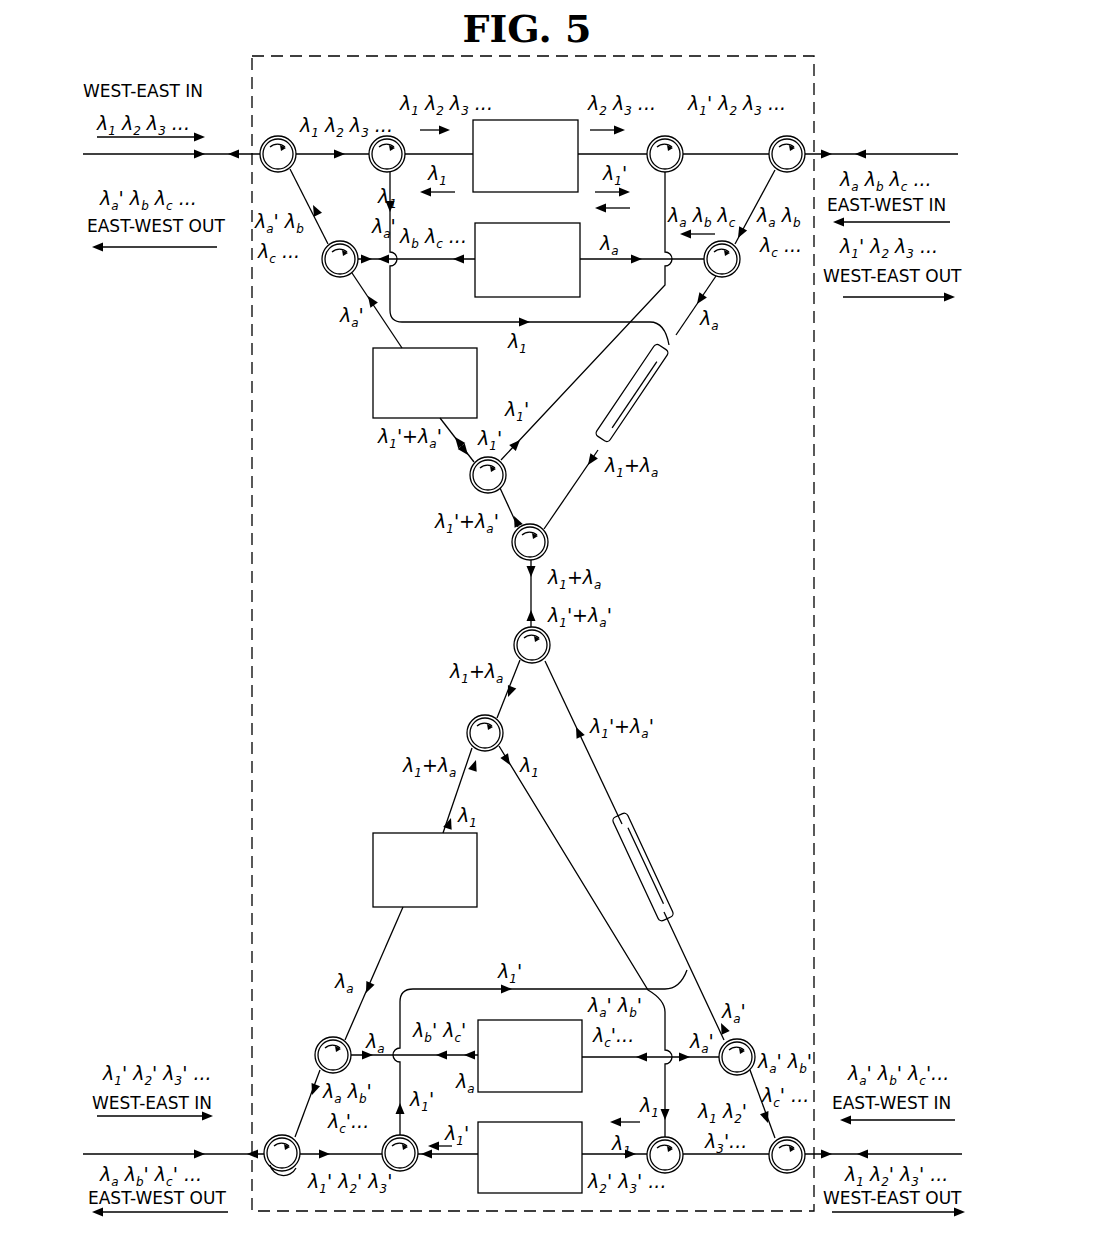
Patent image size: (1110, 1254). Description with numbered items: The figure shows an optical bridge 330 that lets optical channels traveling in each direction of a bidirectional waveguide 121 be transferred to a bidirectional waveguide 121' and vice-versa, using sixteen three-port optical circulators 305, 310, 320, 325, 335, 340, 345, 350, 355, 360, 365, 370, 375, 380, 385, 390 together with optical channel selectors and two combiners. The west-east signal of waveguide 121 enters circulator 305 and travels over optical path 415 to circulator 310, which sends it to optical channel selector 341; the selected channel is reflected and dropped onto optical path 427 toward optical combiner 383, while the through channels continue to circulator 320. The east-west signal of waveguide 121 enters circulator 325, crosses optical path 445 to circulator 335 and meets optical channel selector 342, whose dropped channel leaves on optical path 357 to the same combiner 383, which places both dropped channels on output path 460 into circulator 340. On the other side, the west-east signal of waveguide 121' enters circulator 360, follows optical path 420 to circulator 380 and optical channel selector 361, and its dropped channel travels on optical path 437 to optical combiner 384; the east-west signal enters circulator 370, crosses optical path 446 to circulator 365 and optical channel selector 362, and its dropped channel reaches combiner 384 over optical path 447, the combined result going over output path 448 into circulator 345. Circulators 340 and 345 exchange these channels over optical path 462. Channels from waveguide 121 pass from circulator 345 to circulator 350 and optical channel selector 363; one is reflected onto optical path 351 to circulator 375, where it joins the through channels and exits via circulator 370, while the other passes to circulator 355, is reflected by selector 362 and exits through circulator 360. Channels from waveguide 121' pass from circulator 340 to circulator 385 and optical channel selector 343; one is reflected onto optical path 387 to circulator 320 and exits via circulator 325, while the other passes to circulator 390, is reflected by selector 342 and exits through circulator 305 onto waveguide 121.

The optical bridge 330 is at (822, 58).
The bidirectional waveguide 121 is at (520, 156).
The bidirectional waveguide 121' is at (522, 1140).
The three-port optical circulator 305 is at (287, 140).
The three-port optical circulator 310 is at (375, 172).
The three-port optical circulator 320 is at (662, 136).
The three-port optical circulator 325 is at (800, 136).
The three-port optical circulator 335 is at (738, 274).
The three-port optical circulator 340 is at (552, 542).
The three-port optical circulator 345 is at (552, 658).
The three-port optical circulator 350 is at (472, 726).
The three-port optical circulator 355 is at (318, 1046).
The three-port optical circulator 360 is at (276, 1135).
The three-port optical circulator 365 is at (745, 1040).
The three-port optical circulator 370 is at (776, 1173).
The three-port optical circulator 375 is at (678, 1173).
The three-port optical circulator 380 is at (410, 1170).
The three-port optical circulator 385 is at (470, 481).
The three-port optical circulator 390 is at (332, 276).
The optical channel selector 341 is at (528, 194).
The optical channel selector 342 is at (525, 224).
The optical channel selector 343 is at (373, 394).
The optical channel selector 361 is at (520, 1122).
The optical channel selector 362 is at (555, 1012).
The optical channel selector 363 is at (393, 833).
The optical combiner 383 is at (645, 405).
The optical combiner 384 is at (658, 866).
The optical path 415 is at (325, 158).
The optical path 420 is at (305, 1175).
The optical path 427 is at (392, 214).
The optical path 437 is at (405, 1080).
The optical path 445 is at (752, 215).
The optical path 446 is at (745, 1085).
The optical path 447 is at (695, 970).
The output path 448 is at (606, 805).
The optical path 351 is at (555, 840).
The optical path 357 is at (700, 290).
The optical path 387 is at (590, 376).
The output path 460 is at (565, 503).
The optical path 462 is at (528, 600).